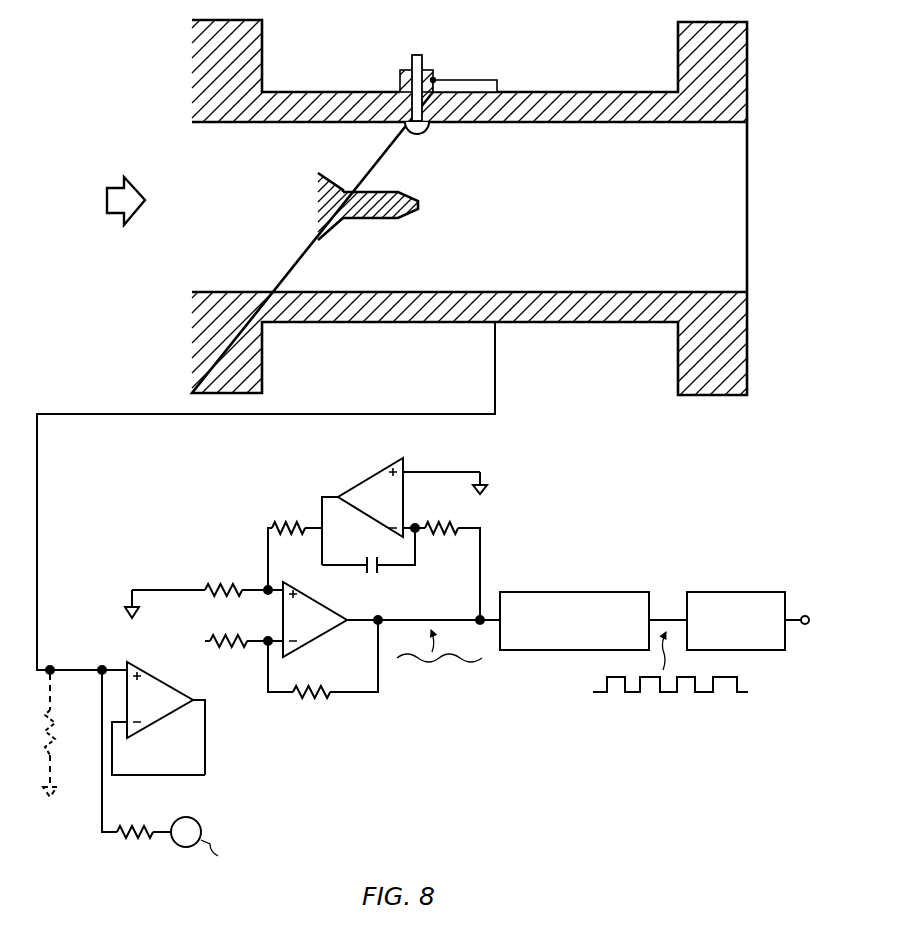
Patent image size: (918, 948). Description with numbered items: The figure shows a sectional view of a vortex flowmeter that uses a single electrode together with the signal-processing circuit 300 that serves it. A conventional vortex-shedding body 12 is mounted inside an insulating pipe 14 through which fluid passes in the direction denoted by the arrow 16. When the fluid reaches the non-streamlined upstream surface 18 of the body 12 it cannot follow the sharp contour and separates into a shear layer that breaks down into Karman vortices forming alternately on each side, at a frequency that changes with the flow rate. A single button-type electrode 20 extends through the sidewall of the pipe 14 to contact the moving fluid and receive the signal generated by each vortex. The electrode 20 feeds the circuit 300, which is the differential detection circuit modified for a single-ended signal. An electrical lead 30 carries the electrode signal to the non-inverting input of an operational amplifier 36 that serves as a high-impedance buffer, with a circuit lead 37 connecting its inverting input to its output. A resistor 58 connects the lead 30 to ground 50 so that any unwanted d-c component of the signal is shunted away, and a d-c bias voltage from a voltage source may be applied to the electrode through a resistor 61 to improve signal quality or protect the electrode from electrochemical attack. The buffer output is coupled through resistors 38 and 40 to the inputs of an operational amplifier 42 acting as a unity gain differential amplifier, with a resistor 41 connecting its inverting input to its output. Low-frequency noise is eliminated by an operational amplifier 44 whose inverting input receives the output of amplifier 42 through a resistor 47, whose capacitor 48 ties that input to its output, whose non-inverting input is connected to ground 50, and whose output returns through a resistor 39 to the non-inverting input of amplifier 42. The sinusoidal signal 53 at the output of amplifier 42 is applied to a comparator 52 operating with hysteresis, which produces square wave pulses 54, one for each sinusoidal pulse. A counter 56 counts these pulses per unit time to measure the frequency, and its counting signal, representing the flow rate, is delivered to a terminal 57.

The vortex-shedding body 12 is at (346, 196).
The insulating pipe 14 is at (264, 34).
The arrow 16 is at (137, 182).
The upstream surface 18 is at (318, 212).
The electrode 20 is at (422, 66).
The electrical lead 30 is at (90, 666).
The operational amplifier 36 is at (150, 674).
The circuit lead 37 is at (158, 776).
The resistor 38 is at (222, 586).
The resistor 39 is at (291, 521).
The resistor 40 is at (227, 636).
The resistor 41 is at (313, 700).
The operational amplifier 42 is at (304, 642).
The operational amplifier 44 is at (368, 488).
The resistor 47 is at (456, 518).
The capacitor 48 is at (380, 570).
The ground 50 is at (126, 616).
The comparator 52 is at (566, 590).
The signal 53 is at (433, 661).
The square wave pulses 54 is at (656, 694).
The counter 56 is at (721, 590).
The terminal 57 is at (800, 633).
The resistor 58 is at (55, 717).
The resistor 61 is at (138, 836).
The circuit 300 is at (214, 515).